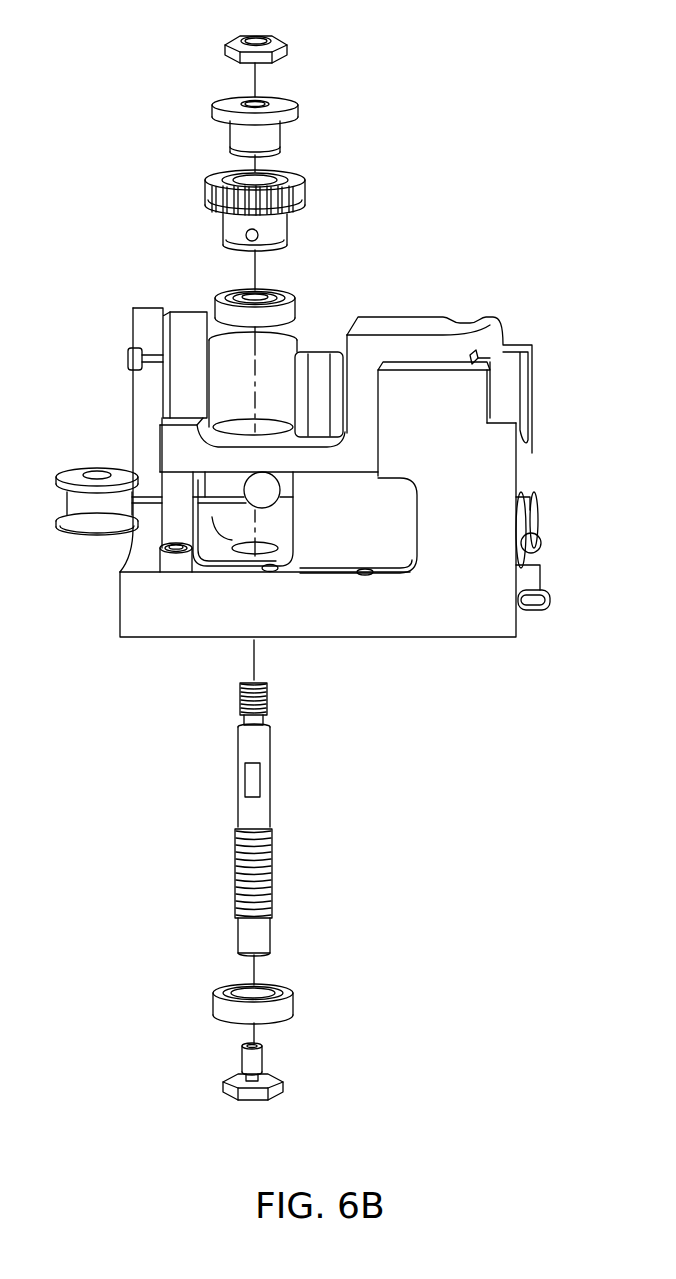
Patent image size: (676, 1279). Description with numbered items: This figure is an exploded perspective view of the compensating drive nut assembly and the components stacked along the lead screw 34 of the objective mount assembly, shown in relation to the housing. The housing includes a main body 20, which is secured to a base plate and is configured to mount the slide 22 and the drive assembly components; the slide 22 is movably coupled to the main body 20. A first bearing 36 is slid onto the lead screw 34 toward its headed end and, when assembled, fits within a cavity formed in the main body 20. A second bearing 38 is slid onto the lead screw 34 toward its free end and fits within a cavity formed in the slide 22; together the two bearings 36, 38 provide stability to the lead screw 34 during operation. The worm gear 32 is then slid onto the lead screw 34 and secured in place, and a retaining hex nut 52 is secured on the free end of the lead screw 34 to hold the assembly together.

The retaining hex nut 52 is at (277, 32).
The worm gear 32 is at (207, 192).
The second bearing 38 is at (293, 311).
The slide 22 is at (420, 325).
The main body 20 is at (463, 555).
The lead screw 34 is at (260, 810).
The first bearing 36 is at (285, 1008).